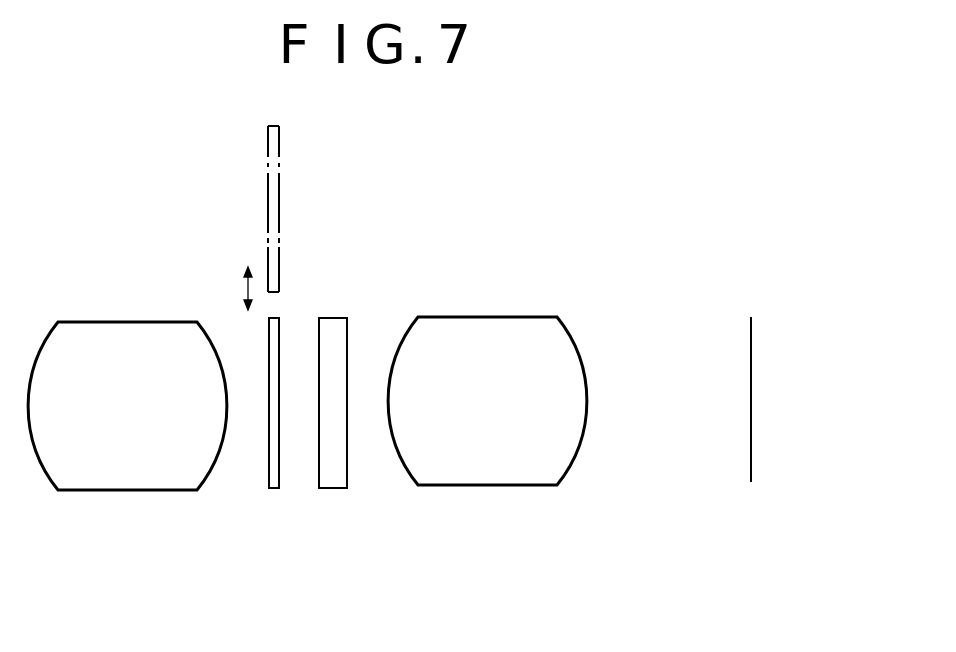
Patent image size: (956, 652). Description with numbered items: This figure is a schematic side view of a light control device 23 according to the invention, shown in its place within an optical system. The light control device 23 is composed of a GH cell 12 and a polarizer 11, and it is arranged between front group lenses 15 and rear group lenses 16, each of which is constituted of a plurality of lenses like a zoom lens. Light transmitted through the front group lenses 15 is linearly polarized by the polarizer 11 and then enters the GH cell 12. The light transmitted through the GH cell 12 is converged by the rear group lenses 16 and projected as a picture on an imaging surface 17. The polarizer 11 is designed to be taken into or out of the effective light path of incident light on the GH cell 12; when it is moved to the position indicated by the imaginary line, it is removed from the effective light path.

The polarizer 11 is at (282, 335).
The GH cell 12 is at (328, 491).
The front group lenses 15 is at (121, 491).
The rear group lenses 16 is at (483, 491).
The imaging surface 17 is at (751, 450).
The light control device 23 is at (360, 308).